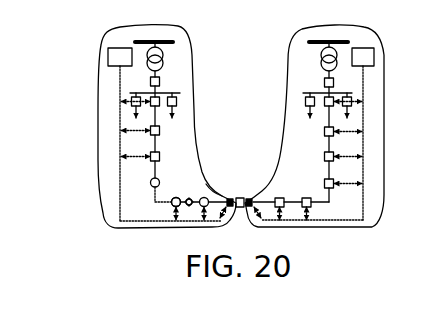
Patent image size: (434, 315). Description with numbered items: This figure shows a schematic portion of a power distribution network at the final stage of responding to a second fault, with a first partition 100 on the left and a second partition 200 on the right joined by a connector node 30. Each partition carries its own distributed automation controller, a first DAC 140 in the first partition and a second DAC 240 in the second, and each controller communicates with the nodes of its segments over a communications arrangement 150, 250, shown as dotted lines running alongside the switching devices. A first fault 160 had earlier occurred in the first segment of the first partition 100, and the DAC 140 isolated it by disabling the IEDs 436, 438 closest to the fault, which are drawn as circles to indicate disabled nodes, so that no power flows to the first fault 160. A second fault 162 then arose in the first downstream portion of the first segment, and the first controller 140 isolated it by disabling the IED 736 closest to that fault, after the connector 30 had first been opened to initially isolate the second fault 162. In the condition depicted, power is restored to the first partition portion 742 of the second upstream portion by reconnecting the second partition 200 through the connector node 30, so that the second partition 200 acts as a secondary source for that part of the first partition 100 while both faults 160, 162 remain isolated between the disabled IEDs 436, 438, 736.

The first partition 100 is at (128, 28).
The second partition 200 is at (360, 28).
The distributed automation controller 140 is at (108, 52).
The distributed automation controller 240 is at (374, 55).
The communications arrangement 150 is at (118, 90).
The communications arrangement 250 is at (364, 88).
The intelligent electronic device 436 is at (150, 182).
The first fault 160 is at (155, 202).
The intelligent electronic device 438 is at (172, 205).
The intelligent electronic device 736 is at (141, 242).
The second fault 162 is at (190, 207).
The first partition portion 742 is at (218, 193).
The connector node 30 is at (243, 198).